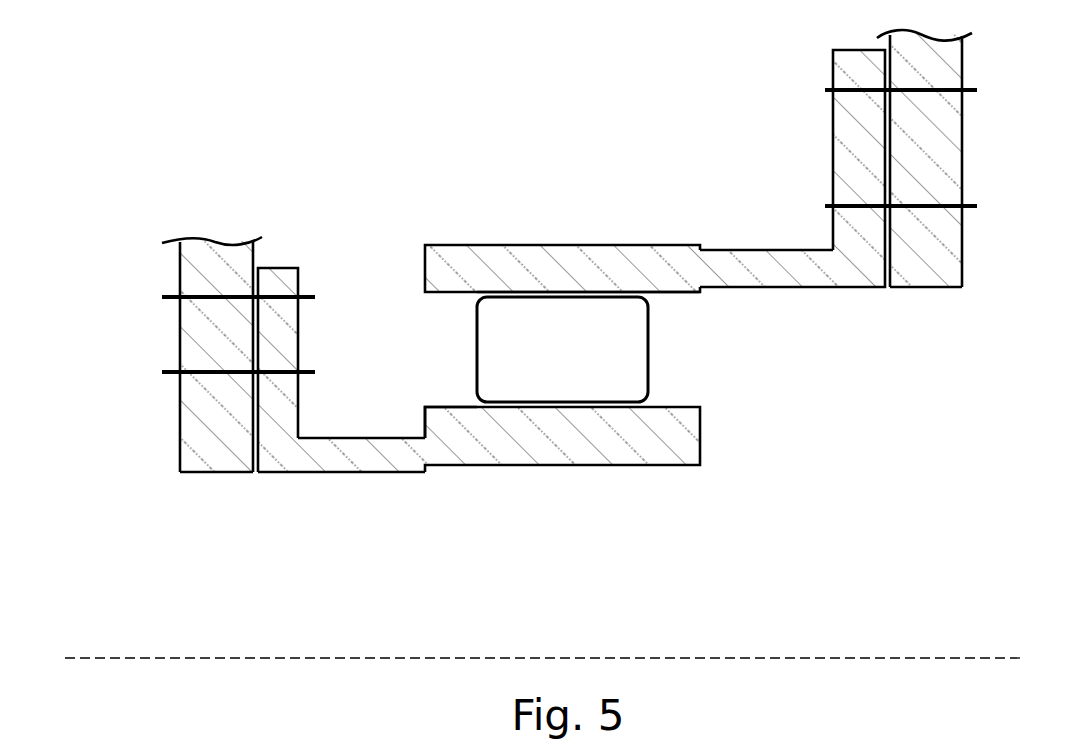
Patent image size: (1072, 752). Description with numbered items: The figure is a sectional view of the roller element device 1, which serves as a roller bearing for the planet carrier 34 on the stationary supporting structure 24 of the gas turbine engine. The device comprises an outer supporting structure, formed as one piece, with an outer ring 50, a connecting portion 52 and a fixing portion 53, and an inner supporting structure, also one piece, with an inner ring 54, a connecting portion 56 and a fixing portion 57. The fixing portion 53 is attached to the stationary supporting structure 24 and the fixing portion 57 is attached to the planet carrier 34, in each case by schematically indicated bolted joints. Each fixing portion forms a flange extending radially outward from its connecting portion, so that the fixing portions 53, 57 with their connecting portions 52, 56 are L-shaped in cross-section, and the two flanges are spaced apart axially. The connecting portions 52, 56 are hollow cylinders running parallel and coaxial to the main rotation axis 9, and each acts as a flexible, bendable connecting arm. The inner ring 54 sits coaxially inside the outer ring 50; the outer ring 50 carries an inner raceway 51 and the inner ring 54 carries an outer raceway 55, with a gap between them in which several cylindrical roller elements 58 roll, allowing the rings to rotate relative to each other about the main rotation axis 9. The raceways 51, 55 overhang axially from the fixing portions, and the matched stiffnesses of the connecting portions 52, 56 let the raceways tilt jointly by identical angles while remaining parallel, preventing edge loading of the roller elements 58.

The roller element device 1 is at (240, 136).
The main rotation axis 9 is at (357, 656).
The stationary supporting structure 24 is at (950, 135).
The planet carrier 34 is at (192, 418).
The outer ring 50 is at (517, 253).
The inner raceway 51 is at (656, 306).
The connecting portion 52 is at (780, 255).
The fixing portion 53 is at (846, 138).
The inner ring 54 is at (537, 455).
The outer raceway 55 is at (470, 400).
The connecting portion 56 is at (386, 463).
The fixing portion 57 is at (286, 266).
The roller elements 58 is at (565, 317).